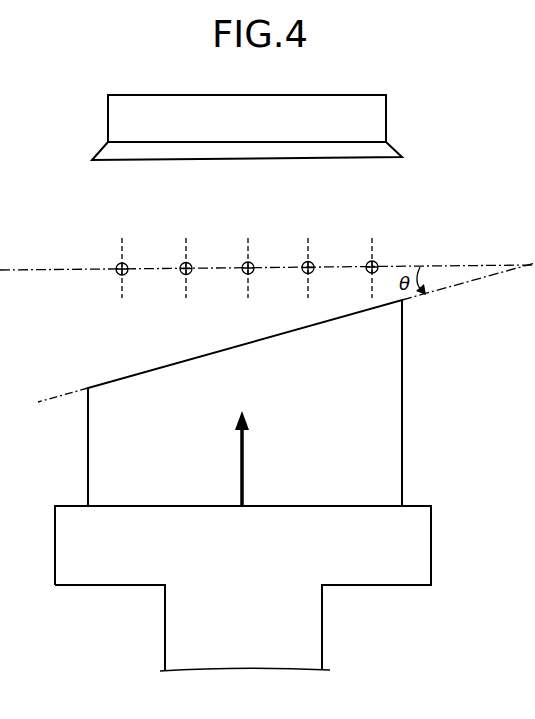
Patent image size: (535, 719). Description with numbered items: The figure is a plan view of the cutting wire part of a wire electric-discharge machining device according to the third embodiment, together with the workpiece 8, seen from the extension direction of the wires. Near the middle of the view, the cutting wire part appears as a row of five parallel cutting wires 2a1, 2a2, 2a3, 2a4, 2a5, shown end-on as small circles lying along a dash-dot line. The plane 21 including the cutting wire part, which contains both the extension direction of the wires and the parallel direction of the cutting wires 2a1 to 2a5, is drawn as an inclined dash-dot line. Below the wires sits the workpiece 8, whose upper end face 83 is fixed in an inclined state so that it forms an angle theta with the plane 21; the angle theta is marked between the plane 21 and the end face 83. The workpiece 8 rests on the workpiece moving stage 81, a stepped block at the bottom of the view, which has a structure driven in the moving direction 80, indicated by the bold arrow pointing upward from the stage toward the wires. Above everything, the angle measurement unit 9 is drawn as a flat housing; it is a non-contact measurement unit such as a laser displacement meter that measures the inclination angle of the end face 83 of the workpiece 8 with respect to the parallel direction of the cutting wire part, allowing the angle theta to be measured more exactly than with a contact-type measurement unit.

The angle measurement unit 9 is at (378, 117).
The cutting wire 2a1 is at (126, 262).
The cutting wire 2a2 is at (190, 262).
The cutting wire 2a3 is at (252, 262).
The cutting wire 2a4 is at (312, 261).
The cutting wire 2a5 is at (376, 261).
The plane including the cutting wire part 21 is at (488, 262).
The end face of the workpiece 83 is at (45, 408).
The workpiece 8 is at (108, 477).
The moving direction 80 is at (245, 463).
The workpiece moving stage 81 is at (133, 575).